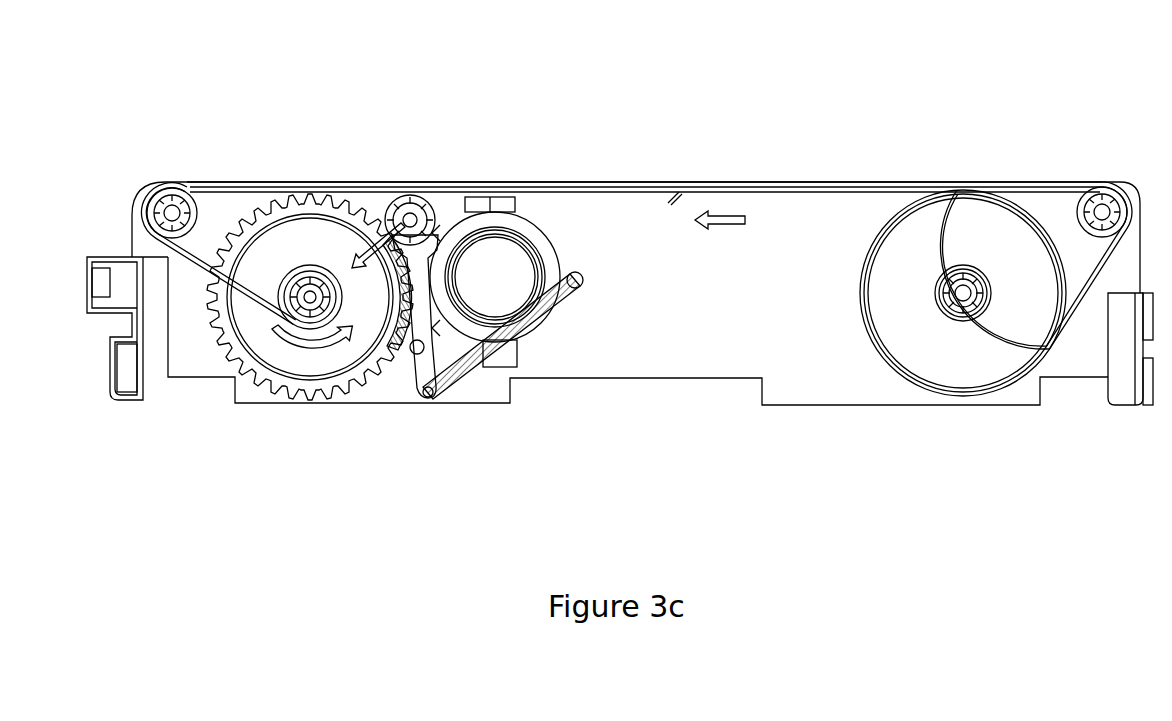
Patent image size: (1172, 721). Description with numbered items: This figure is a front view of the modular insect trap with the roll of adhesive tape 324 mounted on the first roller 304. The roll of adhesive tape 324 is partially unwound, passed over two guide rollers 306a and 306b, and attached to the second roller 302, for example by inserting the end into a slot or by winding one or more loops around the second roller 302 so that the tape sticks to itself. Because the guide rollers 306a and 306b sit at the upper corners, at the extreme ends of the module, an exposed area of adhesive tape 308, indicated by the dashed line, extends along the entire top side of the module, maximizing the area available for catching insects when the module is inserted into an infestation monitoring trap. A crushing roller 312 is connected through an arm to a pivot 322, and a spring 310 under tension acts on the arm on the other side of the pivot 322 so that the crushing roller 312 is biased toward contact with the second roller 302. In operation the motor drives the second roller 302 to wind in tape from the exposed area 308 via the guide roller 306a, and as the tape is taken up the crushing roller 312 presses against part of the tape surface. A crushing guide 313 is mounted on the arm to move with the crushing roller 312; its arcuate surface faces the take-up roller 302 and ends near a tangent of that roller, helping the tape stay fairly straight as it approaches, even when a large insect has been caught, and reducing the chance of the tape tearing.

The second roller 302 is at (297, 308).
The first roller 304 is at (935, 293).
The guide roller 306a is at (1102, 176).
The guide roller 306b is at (172, 176).
The exposed area of adhesive tape 308 is at (1102, 153).
The spring 310 is at (470, 360).
The crushing roller 312 is at (413, 183).
The crushing guide 313 is at (390, 305).
The pivot 322 is at (412, 360).
The roll of adhesive tape 324 is at (968, 357).